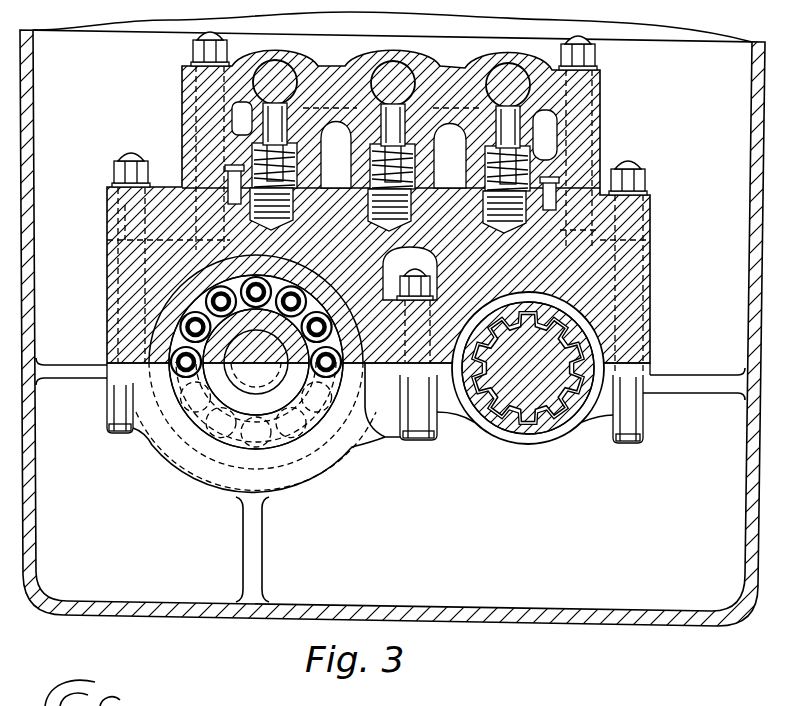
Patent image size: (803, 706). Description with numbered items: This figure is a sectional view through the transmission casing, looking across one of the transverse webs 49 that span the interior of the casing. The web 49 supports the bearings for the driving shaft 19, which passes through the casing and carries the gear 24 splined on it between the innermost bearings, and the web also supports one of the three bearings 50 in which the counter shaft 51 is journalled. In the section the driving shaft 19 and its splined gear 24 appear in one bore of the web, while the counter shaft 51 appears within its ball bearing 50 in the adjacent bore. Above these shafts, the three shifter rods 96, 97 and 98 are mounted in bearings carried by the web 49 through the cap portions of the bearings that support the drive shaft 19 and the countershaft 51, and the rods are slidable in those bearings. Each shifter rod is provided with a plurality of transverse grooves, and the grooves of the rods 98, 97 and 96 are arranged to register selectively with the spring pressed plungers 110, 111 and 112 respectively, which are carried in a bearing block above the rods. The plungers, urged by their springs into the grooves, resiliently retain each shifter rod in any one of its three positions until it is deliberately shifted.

The driving shaft 19 is at (515, 405).
The gear 24 is at (566, 418).
The transverse webs 49 is at (392, 319).
The bearings 50 is at (288, 437).
The counter shaft 51 is at (256, 362).
The shifter rod 96 is at (514, 68).
The shifter rod 97 is at (402, 66).
The shifter rod 98 is at (283, 62).
The spring pressed plunger 110 is at (318, 112).
The spring pressed plunger 111 is at (418, 132).
The spring pressed plunger 112 is at (535, 135).